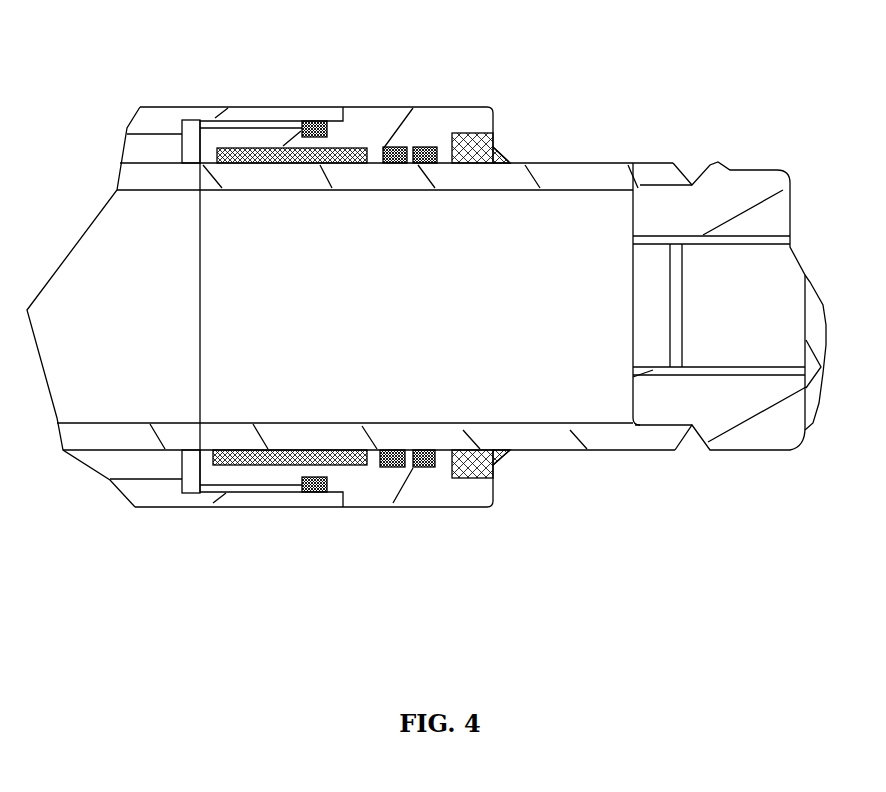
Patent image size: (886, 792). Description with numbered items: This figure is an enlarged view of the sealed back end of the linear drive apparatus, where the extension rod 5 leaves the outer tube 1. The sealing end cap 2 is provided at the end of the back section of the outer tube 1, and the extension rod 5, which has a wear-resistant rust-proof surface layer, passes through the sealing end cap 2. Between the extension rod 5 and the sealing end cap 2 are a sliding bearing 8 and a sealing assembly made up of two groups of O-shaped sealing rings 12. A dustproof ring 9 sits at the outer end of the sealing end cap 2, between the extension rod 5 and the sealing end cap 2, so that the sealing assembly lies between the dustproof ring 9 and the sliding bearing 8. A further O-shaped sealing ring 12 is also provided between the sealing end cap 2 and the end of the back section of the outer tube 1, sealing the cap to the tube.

The outer tube 1 is at (172, 117).
The sealing end cap 2 is at (438, 118).
The extension rod 5 is at (598, 176).
The sliding bearing 8 is at (280, 455).
The dustproof ring 9 is at (492, 473).
The O-shaped sealing ring 12 is at (317, 490).